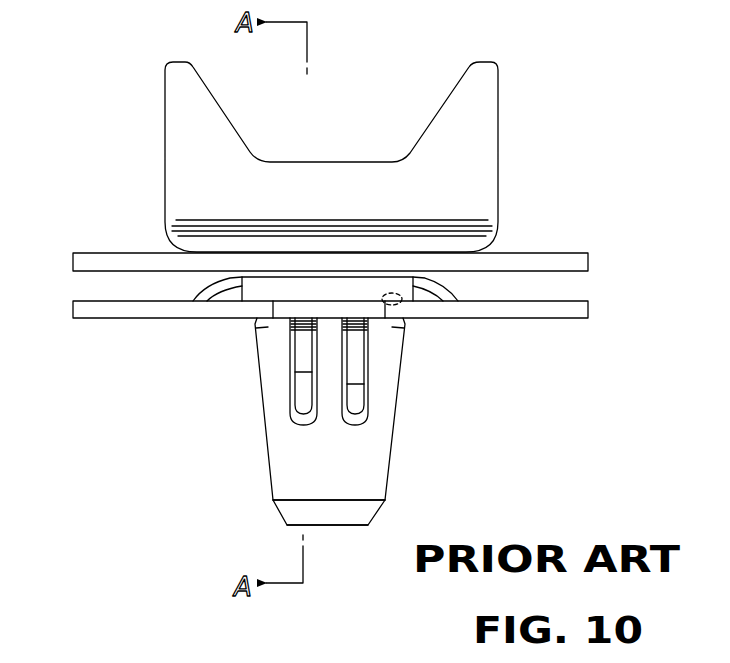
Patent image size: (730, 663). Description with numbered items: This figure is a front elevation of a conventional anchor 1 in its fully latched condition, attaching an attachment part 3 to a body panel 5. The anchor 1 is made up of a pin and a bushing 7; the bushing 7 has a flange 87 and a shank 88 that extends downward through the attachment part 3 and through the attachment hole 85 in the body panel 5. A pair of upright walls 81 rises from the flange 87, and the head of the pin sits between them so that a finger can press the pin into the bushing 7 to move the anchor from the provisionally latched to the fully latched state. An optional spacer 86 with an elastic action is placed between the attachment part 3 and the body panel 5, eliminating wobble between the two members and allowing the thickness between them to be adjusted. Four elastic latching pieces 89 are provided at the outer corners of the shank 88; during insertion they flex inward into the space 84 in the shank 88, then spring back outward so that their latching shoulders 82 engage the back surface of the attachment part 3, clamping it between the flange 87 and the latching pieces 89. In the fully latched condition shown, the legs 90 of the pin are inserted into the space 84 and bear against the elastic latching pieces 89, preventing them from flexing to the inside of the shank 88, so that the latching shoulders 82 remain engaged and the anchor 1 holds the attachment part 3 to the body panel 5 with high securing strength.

The anchor 1 is at (546, 82).
The attachment part 3 is at (588, 262).
The body panel 5 is at (588, 310).
The bushing 7 is at (508, 170).
The upright walls 81 is at (172, 80).
The latching shoulders 82 is at (260, 319).
The space 84 is at (313, 392).
The attachment hole 85 is at (413, 307).
The spacer 86 is at (178, 285).
The flange 87 is at (172, 233).
The shank 88 is at (282, 473).
The elastic latching pieces 89 is at (387, 325).
The legs 90 is at (298, 354).